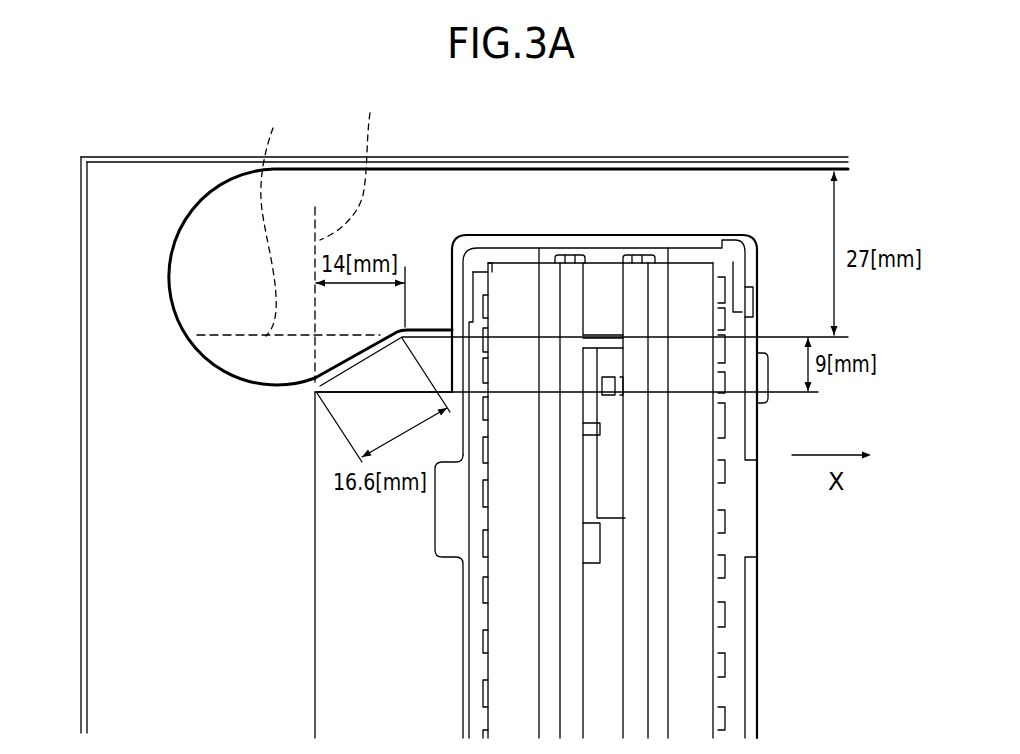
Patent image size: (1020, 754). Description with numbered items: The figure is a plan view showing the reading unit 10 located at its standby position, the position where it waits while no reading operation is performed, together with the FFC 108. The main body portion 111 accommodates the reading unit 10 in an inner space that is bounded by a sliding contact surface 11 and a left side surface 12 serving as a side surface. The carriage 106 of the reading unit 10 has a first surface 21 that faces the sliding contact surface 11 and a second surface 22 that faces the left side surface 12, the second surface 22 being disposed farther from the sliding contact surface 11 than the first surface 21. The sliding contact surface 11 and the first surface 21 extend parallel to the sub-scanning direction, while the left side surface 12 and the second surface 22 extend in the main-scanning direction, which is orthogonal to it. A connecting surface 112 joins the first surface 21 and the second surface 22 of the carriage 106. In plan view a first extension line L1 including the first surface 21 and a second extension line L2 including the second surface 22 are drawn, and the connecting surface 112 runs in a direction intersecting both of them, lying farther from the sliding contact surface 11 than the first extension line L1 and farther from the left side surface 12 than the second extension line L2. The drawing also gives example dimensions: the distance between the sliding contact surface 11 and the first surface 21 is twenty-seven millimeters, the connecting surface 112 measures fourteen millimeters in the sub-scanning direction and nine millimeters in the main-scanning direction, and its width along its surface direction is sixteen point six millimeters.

The reading unit 10 is at (758, 232).
The sliding contact surface 11 is at (178, 165).
The left side surface 12 is at (88, 226).
The first surface 21 is at (432, 330).
The second surface 22 is at (313, 512).
The carriage 106 is at (690, 250).
The FFC 108 is at (193, 336).
The main body portion 111 is at (555, 158).
The connecting surface 112 is at (355, 360).
The first extension line L1 is at (279, 215).
The second extension line L2 is at (359, 162).